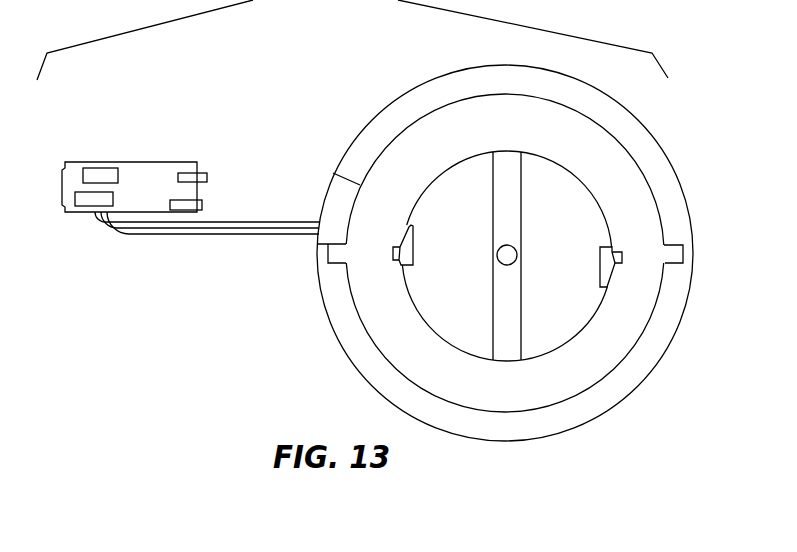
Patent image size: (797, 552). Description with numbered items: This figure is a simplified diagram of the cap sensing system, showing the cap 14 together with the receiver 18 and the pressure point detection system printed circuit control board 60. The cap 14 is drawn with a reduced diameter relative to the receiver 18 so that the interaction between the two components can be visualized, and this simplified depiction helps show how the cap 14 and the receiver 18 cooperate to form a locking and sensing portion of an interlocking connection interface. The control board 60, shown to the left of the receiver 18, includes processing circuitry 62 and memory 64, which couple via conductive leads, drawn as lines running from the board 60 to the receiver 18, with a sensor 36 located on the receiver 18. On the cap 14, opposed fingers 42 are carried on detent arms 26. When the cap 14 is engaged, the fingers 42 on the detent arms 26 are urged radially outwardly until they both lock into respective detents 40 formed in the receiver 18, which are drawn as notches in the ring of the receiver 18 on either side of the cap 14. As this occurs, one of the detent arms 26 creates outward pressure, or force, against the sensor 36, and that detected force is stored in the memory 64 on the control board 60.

The cap 14 is at (577, 361).
The receiver 18 is at (383, 79).
The detent arms 26 is at (402, 246).
The sensor 36 is at (363, 214).
The detents 40 is at (352, 257).
The opposed fingers 42 is at (393, 262).
The pressure point detection system printed circuit control board 60 is at (179, 171).
The processing circuitry 62 is at (97, 170).
The memory 64 is at (86, 207).